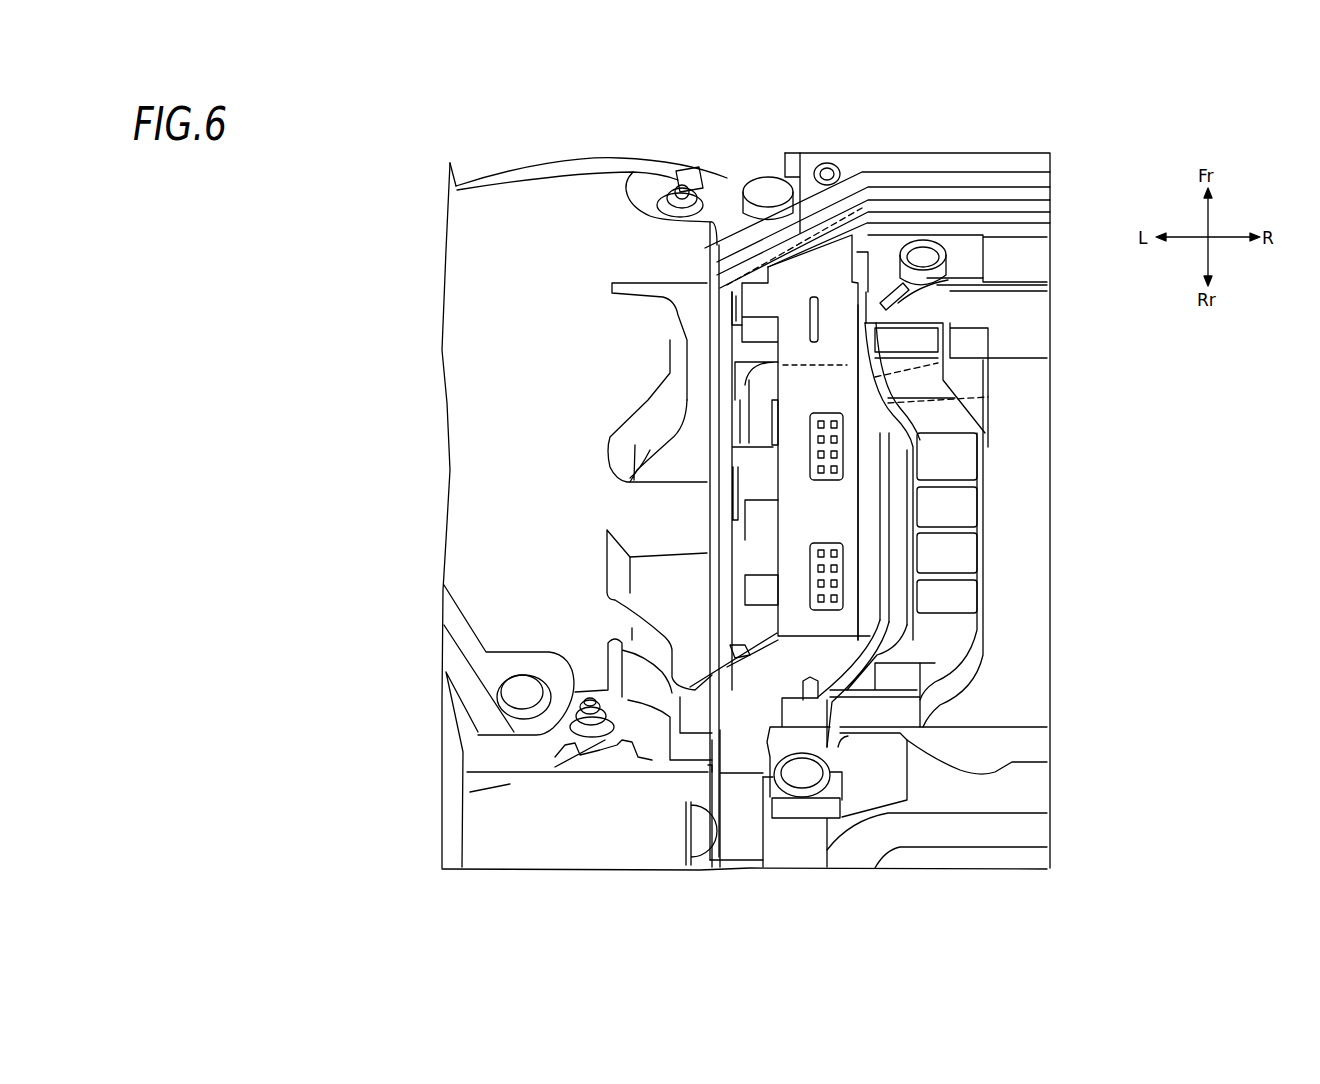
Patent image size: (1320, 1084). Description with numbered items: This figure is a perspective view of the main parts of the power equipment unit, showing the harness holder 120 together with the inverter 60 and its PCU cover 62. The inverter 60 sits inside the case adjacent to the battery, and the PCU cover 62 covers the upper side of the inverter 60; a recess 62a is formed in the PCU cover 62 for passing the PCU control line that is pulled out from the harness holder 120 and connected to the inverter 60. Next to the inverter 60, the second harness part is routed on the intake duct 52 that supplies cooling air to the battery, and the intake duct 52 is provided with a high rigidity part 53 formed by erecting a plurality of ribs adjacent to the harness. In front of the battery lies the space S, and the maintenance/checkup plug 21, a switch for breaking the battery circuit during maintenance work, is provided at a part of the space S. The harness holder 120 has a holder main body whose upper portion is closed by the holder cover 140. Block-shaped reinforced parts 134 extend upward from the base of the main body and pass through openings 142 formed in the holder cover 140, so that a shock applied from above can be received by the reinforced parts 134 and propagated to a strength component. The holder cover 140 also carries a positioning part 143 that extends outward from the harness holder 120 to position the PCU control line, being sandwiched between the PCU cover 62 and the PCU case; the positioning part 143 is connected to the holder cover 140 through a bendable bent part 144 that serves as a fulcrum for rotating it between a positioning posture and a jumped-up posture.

The inverter 60 is at (449, 246).
The PCU cover 62 is at (481, 455).
The recess 62a is at (697, 497).
The positioning part 143 is at (710, 518).
The bent part 144 is at (783, 517).
The space S is at (880, 259).
The maintenance/checkup plug 21 is at (968, 252).
The harness holder 120 is at (858, 388).
The holder cover 140 is at (868, 412).
The reinforced part 134 is at (845, 437).
The openings 142 is at (845, 470).
The high rigidity part 53 is at (988, 605).
The intake duct 52 is at (1025, 645).